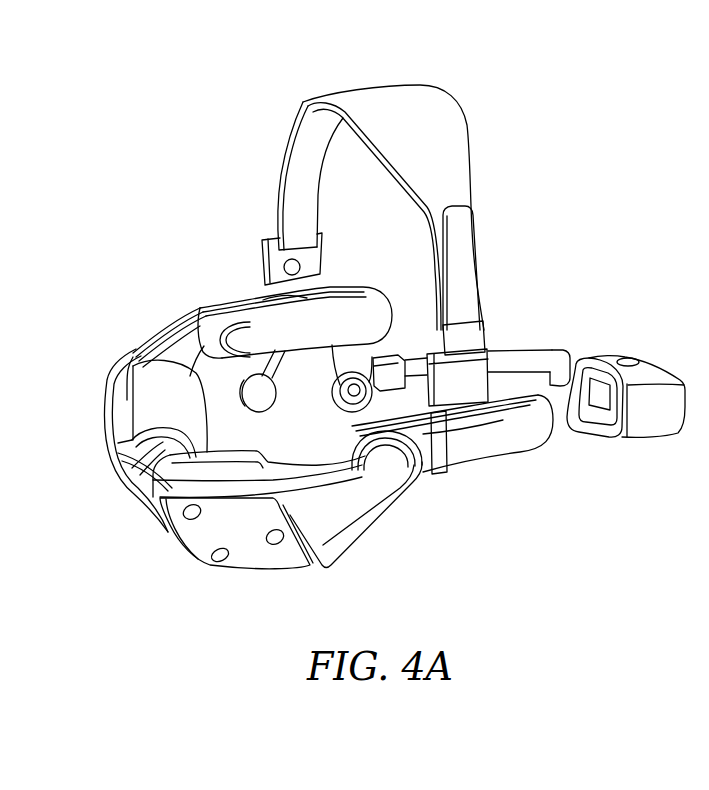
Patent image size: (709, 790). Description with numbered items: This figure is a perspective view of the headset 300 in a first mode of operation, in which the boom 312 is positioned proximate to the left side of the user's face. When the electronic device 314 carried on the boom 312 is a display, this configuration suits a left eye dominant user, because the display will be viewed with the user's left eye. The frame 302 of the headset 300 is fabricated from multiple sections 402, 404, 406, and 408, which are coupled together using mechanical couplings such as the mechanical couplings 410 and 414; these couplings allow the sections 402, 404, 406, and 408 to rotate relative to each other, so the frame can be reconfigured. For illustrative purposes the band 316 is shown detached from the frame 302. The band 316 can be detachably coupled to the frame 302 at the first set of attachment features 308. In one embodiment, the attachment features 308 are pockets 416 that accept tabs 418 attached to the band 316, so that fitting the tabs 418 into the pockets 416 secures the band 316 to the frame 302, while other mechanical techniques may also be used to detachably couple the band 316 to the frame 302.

The headset 300 is at (585, 72).
The frame 302 is at (182, 318).
The first set of attachment features 308 is at (322, 300).
The boom 312 is at (523, 347).
The electronic device 314 is at (661, 369).
The band 316 is at (449, 102).
The section 402 is at (104, 380).
The section 404 is at (532, 443).
The section 406 is at (390, 304).
The section 408 is at (310, 363).
The mechanical coupling 410 is at (401, 505).
The mechanical coupling 414 is at (198, 296).
The pocket 416 is at (430, 421).
The tab 418 is at (260, 248).